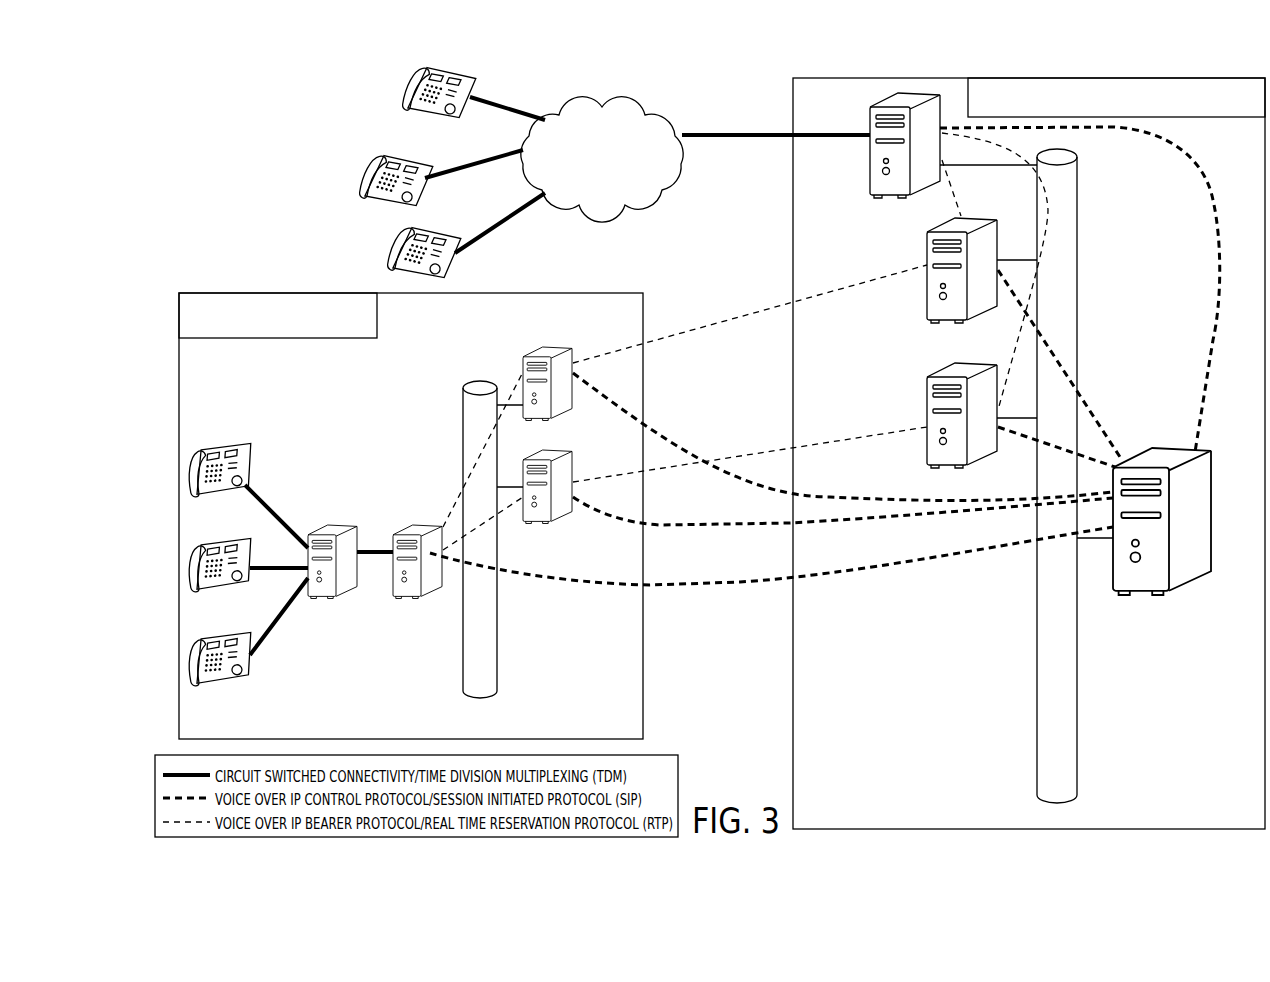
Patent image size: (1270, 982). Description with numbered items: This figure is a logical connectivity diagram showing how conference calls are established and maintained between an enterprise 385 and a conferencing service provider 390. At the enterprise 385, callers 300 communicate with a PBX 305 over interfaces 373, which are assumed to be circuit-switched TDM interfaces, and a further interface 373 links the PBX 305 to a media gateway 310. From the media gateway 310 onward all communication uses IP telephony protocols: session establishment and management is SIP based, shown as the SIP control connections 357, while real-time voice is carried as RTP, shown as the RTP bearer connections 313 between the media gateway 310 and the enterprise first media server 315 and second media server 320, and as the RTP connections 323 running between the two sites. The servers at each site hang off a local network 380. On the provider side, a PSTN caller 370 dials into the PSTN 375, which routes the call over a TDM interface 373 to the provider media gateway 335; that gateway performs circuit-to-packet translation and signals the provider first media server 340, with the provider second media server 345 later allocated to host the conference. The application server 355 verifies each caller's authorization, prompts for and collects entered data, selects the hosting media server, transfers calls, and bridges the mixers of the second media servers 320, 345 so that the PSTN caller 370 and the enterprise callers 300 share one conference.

The callers 300 is at (237, 453).
The PBX 305 is at (347, 523).
The media gateway 310 is at (440, 520).
The VoIP bearer (RTP) connection between media gateway and media servers 313 is at (490, 513).
The media server 1 315 is at (573, 353).
The media server 2 320 is at (573, 468).
The VoIP bearer protocol (RTP) connection 323 is at (747, 318).
The media gateway 335 is at (870, 108).
The media server 1 340 is at (928, 254).
The media server 2 345 is at (928, 389).
The application server 355 is at (1150, 455).
The VoIP control protocol (SIP) connection 357 is at (1218, 237).
The PSTN caller 370 is at (458, 70).
The interfaces 373 is at (507, 102).
The PSTN 375 is at (617, 105).
The network bus 380 is at (492, 636).
The enterprise 385 is at (313, 293).
The conferencing service provider 390 is at (1037, 78).